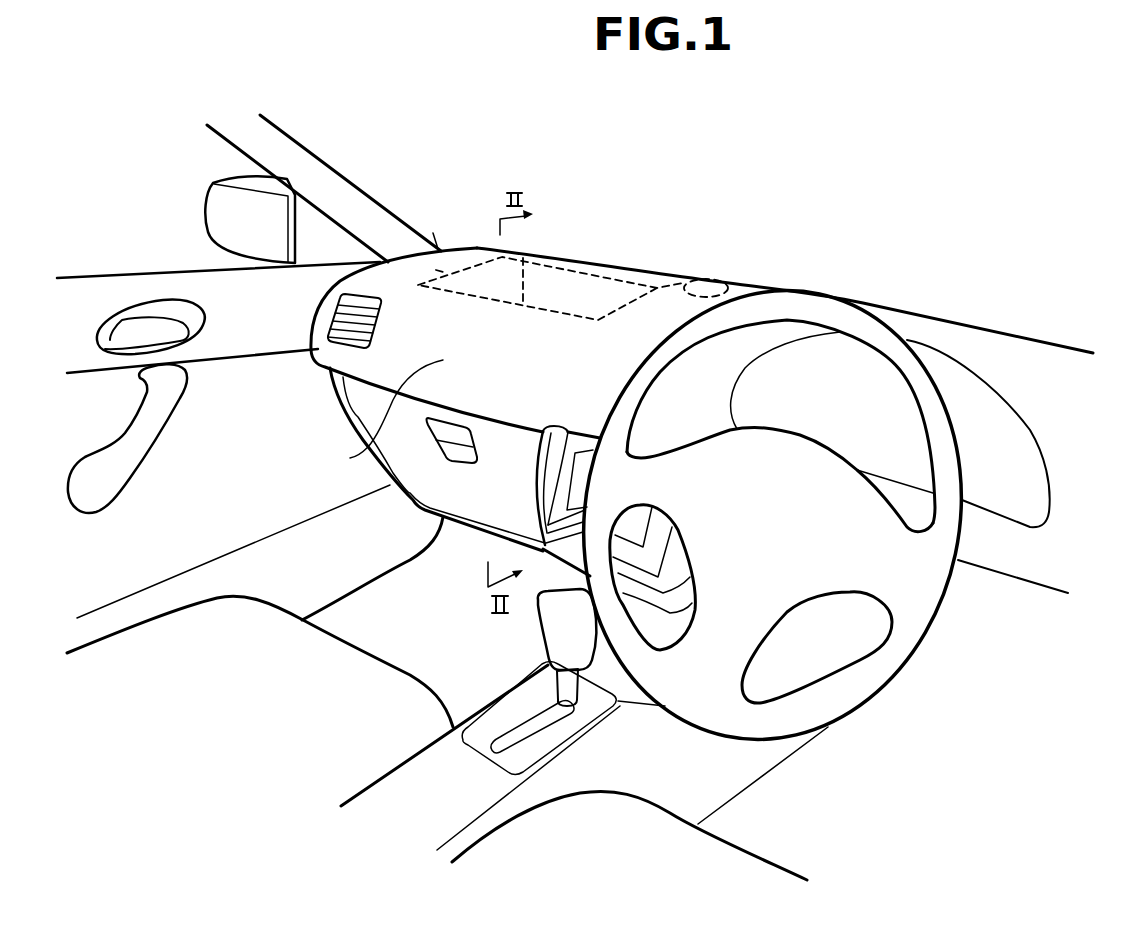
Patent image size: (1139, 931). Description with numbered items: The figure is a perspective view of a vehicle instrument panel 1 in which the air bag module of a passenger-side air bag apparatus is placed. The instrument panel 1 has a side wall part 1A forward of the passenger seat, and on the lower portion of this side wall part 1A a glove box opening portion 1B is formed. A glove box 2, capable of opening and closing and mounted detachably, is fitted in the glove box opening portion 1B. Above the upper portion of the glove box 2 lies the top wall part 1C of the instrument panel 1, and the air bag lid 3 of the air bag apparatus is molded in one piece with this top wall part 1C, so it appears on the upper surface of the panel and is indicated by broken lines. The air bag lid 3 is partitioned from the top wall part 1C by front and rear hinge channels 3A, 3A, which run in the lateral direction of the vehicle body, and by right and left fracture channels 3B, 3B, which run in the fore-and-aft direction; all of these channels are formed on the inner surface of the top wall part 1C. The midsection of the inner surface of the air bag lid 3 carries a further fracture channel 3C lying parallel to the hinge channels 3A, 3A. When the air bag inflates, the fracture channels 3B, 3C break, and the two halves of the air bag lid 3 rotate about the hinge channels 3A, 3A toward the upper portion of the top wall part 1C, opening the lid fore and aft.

The instrument panel 1 is at (308, 327).
The side wall part 1A is at (368, 440).
The glove box opening portion 1B is at (347, 420).
The top wall part 1C is at (413, 268).
The glove box 2 is at (407, 450).
The air bag lid 3 is at (656, 286).
The hinge channels 3A is at (543, 251).
The fracture channels 3B is at (438, 270).
The fracture channel 3C is at (627, 268).